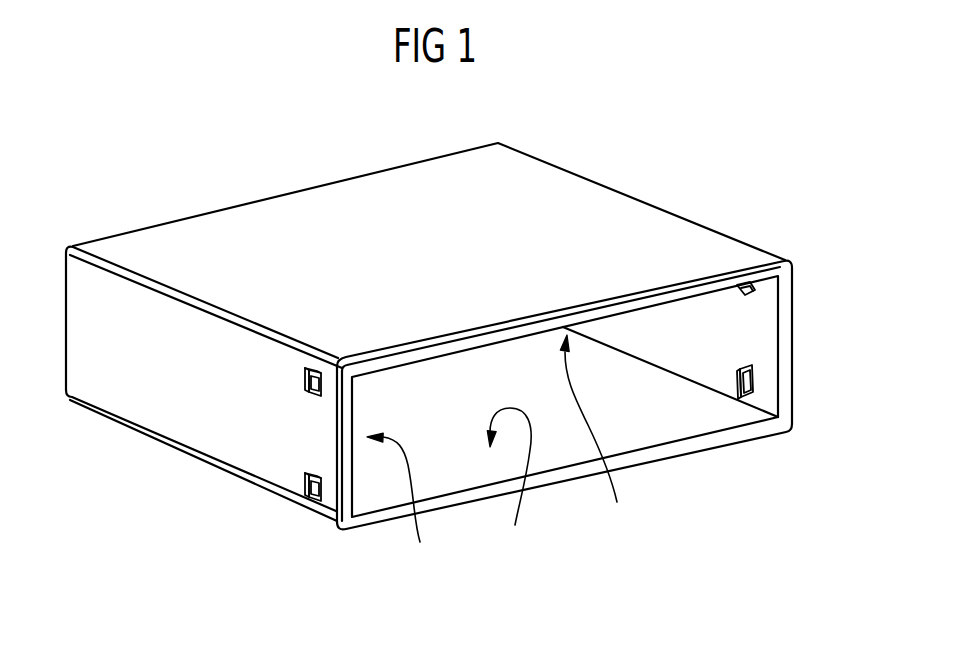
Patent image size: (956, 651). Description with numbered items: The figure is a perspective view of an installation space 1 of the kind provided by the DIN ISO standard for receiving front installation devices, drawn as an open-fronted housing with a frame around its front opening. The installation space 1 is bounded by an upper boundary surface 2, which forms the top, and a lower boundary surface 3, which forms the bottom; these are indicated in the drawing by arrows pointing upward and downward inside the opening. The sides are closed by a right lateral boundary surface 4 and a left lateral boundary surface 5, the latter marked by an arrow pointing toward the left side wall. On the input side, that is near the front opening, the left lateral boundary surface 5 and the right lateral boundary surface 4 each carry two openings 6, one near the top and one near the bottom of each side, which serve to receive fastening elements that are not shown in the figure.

The installation space 1 is at (158, 190).
The upper boundary surface 2 is at (593, 434).
The lower boundary surface 3 is at (509, 482).
The right lateral boundary surface 4 is at (748, 340).
The left lateral boundary surface 5 is at (399, 502).
The openings 6 is at (303, 386).